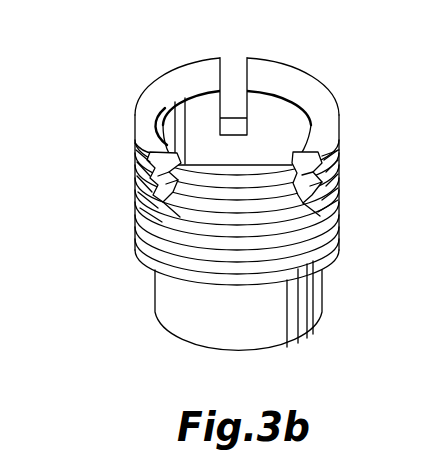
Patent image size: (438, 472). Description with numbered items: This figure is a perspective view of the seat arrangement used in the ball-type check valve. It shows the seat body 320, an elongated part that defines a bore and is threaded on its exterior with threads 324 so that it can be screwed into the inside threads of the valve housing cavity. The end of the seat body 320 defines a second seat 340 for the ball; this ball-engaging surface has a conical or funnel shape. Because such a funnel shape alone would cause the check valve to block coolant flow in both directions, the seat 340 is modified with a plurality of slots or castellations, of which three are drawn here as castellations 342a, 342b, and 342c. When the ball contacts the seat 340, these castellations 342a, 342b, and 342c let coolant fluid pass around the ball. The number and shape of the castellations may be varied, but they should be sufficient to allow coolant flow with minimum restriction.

The seat body 320 is at (320, 296).
The exterior threads 324 is at (338, 218).
The second seat 340 is at (168, 82).
The castellation 342a is at (235, 43).
The castellation 342b is at (160, 189).
The castellation 342c is at (313, 178).